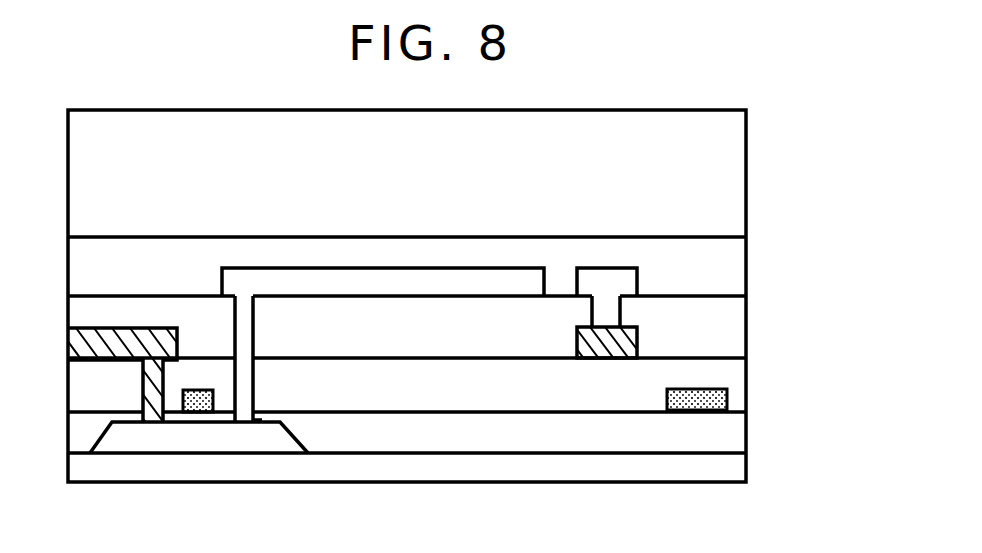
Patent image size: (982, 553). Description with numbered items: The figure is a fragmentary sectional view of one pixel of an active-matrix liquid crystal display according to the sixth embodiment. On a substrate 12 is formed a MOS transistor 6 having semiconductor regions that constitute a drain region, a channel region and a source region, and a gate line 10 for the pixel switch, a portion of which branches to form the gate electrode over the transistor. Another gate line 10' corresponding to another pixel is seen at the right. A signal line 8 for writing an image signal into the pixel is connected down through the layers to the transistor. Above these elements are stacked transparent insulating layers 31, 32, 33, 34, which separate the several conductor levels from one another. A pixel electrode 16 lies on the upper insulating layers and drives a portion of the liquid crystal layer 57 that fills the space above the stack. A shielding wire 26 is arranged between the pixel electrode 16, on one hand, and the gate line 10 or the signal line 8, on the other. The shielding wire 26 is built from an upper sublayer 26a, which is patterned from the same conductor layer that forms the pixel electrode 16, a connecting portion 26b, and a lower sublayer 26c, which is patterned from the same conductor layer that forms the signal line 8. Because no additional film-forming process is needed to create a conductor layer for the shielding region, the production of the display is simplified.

The liquid crystal layer 57 is at (738, 168).
The transparent insulating layer 34 is at (68, 270).
The transparent insulating layer 33 is at (68, 314).
The transparent insulating layer 32 is at (68, 384).
The transparent insulating layer 31 is at (68, 432).
The substrate 12 is at (746, 463).
The signal line 8 is at (108, 348).
The gate line 10 is at (202, 460).
The another gate line 10' is at (740, 403).
The MOS transistor 6 is at (272, 438).
The pixel electrode 16 is at (442, 290).
The shielding wire 26 is at (551, 333).
The upper sublayer 26a is at (637, 277).
The intermediate portion of shielding wire 26b is at (620, 310).
The lower sublayer 26c is at (637, 338).